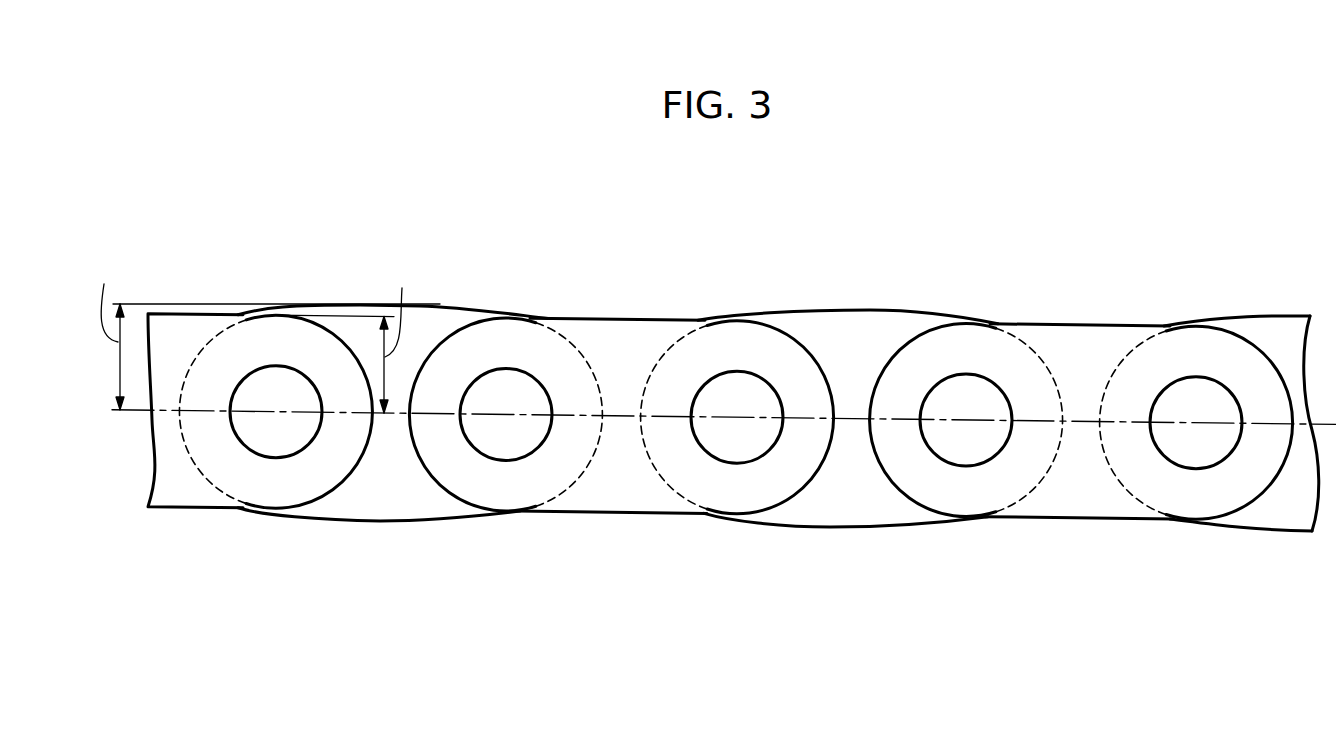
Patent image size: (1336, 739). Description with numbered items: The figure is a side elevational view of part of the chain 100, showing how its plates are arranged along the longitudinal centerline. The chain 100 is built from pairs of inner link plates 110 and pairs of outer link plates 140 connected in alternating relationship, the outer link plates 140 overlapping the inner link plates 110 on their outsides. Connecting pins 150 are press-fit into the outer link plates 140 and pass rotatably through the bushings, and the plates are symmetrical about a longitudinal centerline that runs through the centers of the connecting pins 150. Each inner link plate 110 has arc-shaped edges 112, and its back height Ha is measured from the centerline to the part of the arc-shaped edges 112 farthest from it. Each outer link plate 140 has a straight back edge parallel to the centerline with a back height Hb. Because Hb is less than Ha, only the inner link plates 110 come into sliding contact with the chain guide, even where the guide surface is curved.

The chain 100 is at (1021, 230).
The inner link plate 110 is at (381, 467).
The arc-shaped edge 112 is at (432, 307).
The outer link plate 140 is at (175, 463).
The connecting pin 150 is at (273, 430).